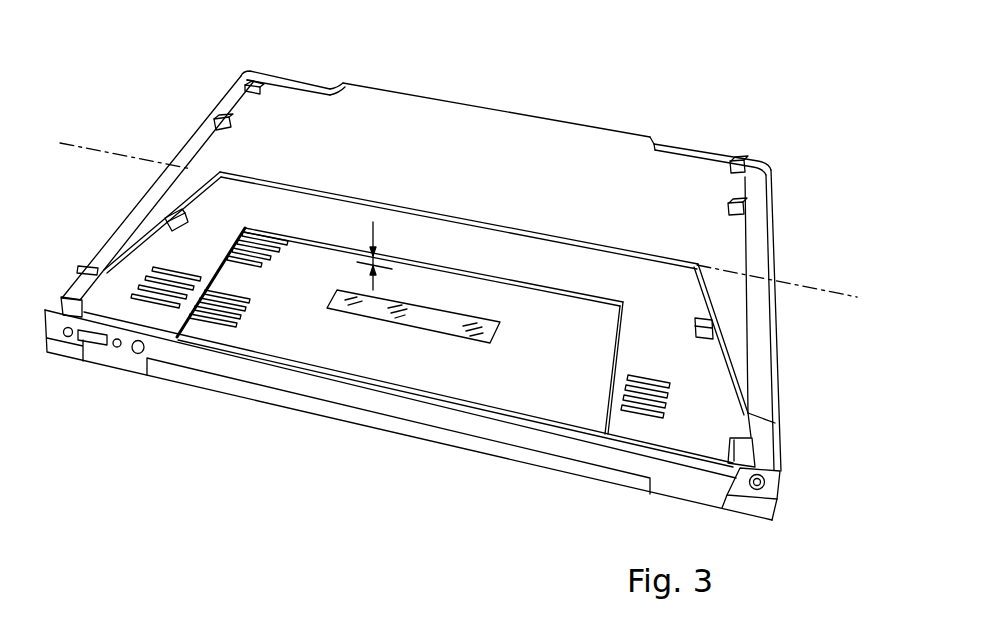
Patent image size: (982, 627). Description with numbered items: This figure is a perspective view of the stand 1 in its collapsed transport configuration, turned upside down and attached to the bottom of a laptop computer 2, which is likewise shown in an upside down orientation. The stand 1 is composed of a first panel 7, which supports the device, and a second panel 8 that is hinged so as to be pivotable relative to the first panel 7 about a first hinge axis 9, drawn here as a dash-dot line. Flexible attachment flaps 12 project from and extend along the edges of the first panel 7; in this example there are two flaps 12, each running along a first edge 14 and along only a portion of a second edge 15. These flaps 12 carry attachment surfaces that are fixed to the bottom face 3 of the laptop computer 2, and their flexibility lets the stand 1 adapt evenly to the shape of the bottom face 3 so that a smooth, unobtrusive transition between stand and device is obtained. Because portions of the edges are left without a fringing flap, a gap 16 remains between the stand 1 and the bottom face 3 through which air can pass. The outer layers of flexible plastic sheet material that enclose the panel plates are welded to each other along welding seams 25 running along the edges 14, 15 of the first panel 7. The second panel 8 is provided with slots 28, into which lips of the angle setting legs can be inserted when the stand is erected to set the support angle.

The stand 1 is at (505, 87).
The laptop computer 2 is at (378, 450).
The bottom face 3 is at (429, 375).
The first panel 7 is at (482, 172).
The second panel 8 is at (548, 274).
The first hinge axis 9 is at (848, 291).
The flexible attachment flaps 12 is at (178, 138).
The first edge 14 is at (122, 222).
The second edge 15 is at (302, 79).
The gap 16 is at (380, 257).
The welding seams 25 is at (144, 192).
The slots 28 is at (186, 288).